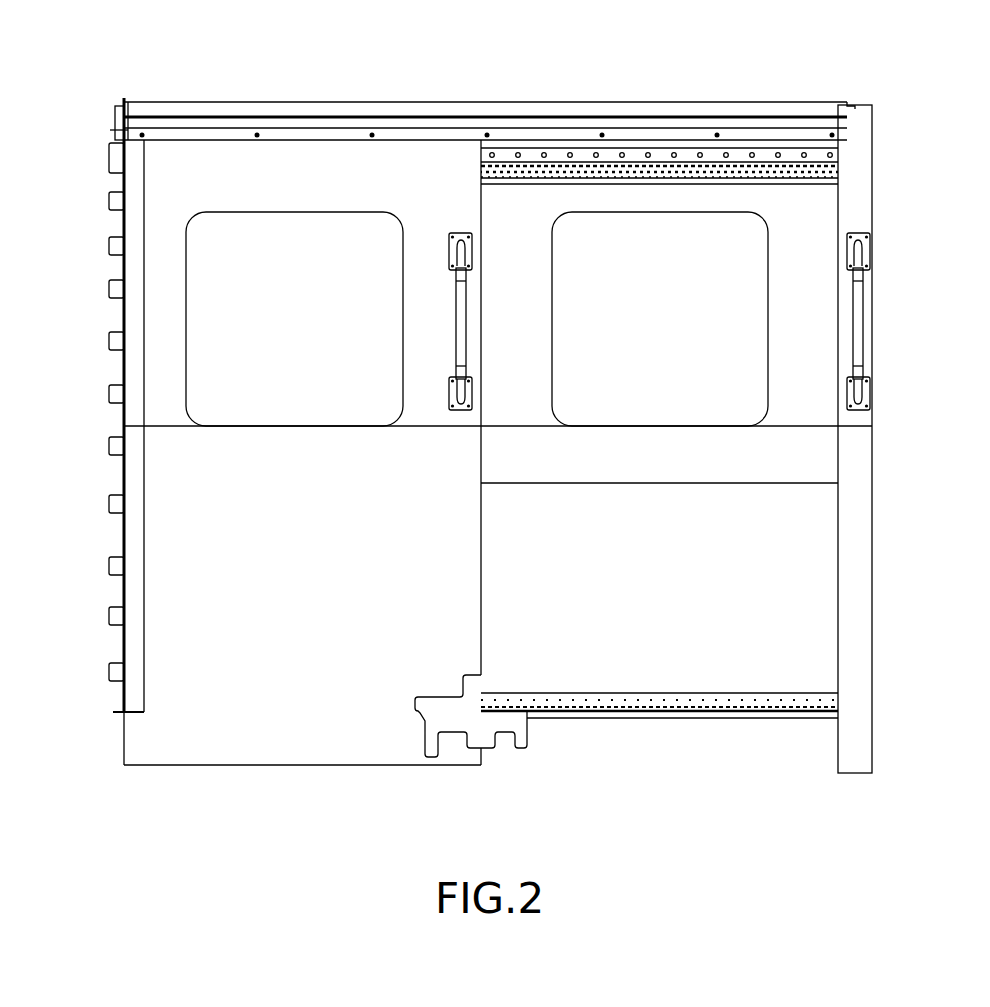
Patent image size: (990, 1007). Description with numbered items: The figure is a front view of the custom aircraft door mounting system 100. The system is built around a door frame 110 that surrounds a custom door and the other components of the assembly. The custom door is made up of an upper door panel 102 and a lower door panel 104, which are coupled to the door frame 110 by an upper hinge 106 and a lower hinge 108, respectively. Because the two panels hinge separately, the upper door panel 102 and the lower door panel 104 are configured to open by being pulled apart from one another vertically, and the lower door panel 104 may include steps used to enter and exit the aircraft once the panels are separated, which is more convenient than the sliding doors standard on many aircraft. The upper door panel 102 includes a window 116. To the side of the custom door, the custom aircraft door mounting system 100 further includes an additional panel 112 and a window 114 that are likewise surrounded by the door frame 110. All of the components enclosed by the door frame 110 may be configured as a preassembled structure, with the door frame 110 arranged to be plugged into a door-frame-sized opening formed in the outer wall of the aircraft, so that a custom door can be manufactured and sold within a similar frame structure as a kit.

The custom aircraft door mounting system 100 is at (103, 70).
The upper door panel 102 is at (822, 212).
The lower door panel 104 is at (812, 606).
The upper hinge 106 is at (790, 160).
The lower hinge 108 is at (730, 703).
The door frame 110 is at (476, 101).
The additional panel 112 is at (200, 562).
The window 114 is at (200, 318).
The window 116 is at (757, 327).